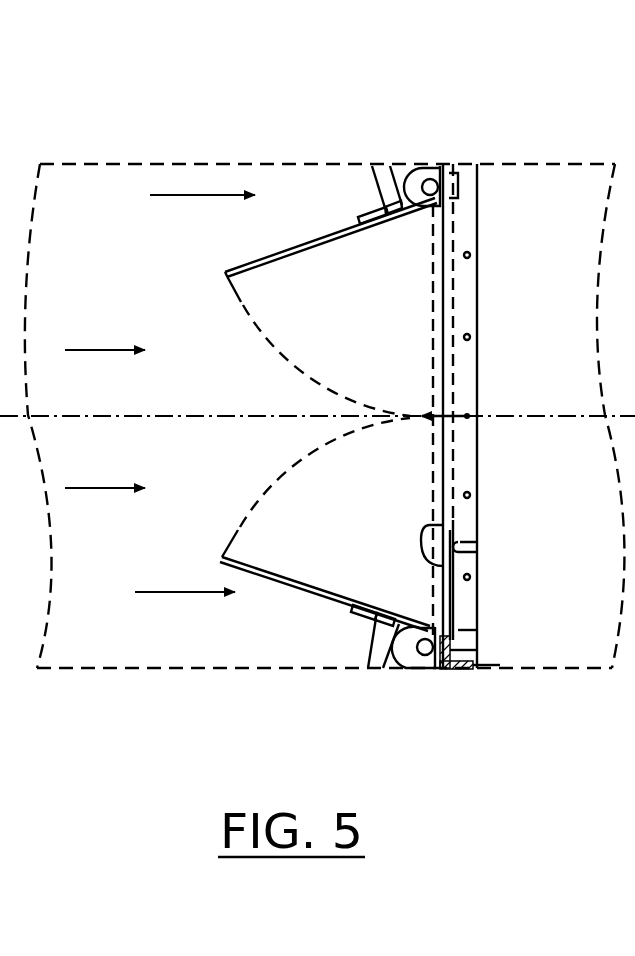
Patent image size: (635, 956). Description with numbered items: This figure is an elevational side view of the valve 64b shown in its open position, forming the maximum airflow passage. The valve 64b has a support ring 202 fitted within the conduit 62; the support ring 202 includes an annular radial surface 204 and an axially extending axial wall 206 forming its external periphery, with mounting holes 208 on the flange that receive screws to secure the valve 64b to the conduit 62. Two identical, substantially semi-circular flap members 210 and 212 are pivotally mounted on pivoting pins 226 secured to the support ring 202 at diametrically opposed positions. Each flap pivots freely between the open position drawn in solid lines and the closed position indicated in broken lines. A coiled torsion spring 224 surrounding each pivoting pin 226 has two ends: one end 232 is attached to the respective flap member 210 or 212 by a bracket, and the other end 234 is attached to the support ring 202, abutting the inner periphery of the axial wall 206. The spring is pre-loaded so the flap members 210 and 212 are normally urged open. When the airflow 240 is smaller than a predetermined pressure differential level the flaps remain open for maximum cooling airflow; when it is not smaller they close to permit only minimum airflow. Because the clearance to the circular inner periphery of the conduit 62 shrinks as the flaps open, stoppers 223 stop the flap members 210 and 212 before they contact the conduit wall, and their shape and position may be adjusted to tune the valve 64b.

The conduit 62 is at (142, 162).
The valve 64b is at (387, 106).
The support ring 202 is at (478, 276).
The annular radial surface 204 is at (445, 525).
The axial wall 206 is at (490, 665).
The mounting holes 208 is at (478, 496).
The flap member 210 is at (241, 302).
The flap member 212 is at (239, 550).
The stoppers 223 is at (385, 168).
The coiled torsion spring 224 is at (362, 204).
The pivoting pins 226 is at (437, 160).
The spring end 232 is at (350, 612).
The spring end 234 is at (476, 625).
The airflow 240 is at (178, 200).